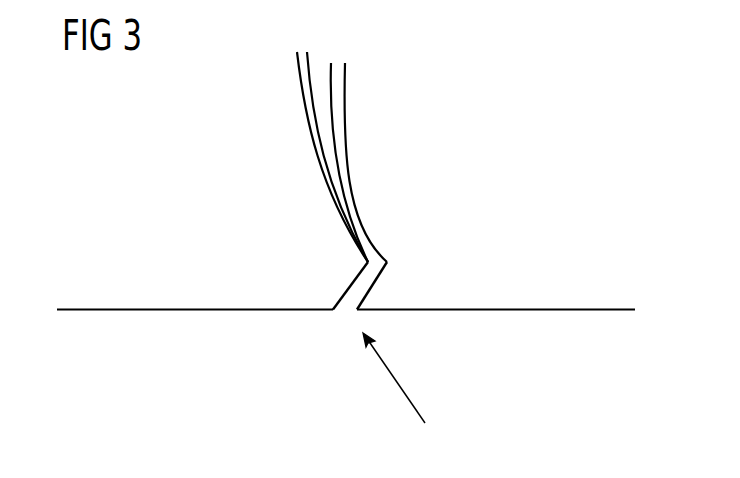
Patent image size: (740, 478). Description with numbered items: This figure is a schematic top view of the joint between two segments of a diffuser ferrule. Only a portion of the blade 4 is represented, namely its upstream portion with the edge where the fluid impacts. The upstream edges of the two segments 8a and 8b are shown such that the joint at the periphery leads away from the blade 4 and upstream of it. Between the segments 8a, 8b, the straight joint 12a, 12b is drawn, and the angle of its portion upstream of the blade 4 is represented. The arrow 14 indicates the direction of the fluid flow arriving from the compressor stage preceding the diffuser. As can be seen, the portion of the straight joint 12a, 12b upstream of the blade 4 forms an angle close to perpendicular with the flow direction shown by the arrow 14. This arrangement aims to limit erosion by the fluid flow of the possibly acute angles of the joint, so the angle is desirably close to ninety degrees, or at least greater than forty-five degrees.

The blade 4 is at (317, 90).
The segment 8a is at (260, 230).
The segment 8b is at (490, 230).
The straight joint portion 12a is at (354, 279).
The straight joint portion 12b is at (372, 287).
The arrow 14 is at (396, 382).